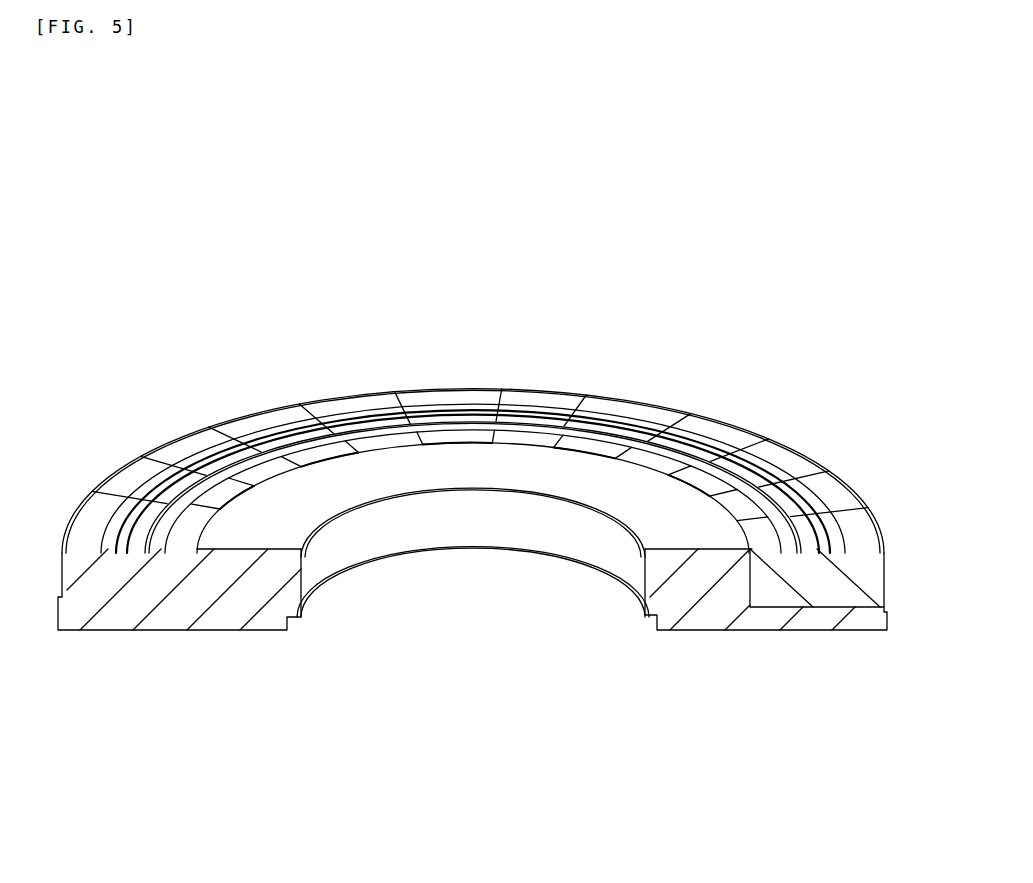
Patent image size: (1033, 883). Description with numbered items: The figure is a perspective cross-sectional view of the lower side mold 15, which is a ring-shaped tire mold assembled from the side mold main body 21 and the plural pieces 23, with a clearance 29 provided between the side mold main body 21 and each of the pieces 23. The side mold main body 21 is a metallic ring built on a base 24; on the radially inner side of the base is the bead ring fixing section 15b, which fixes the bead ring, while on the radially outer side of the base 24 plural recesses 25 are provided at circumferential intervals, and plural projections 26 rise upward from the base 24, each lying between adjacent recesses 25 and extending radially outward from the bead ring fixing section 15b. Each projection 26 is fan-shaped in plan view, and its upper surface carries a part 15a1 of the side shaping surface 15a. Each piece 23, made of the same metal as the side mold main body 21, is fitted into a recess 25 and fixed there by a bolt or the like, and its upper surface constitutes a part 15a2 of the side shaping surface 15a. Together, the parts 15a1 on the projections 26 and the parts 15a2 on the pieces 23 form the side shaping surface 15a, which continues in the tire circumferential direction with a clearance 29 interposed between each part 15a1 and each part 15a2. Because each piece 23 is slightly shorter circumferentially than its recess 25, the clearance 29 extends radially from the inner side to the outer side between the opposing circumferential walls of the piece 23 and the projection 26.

The lower side mold 15 is at (490, 87).
The side shaping surface 15a is at (753, 450).
The part of the side shaping surface 15a1 is at (328, 410).
The part of the side shaping surface 15a2 is at (473, 407).
The bead ring fixing section 15b is at (640, 500).
The side mold main body 21 is at (158, 634).
The piece 23 is at (110, 477).
The base 24 is at (337, 547).
The recess 25 is at (843, 600).
The projection 26 is at (73, 527).
The clearance 29 is at (147, 473).